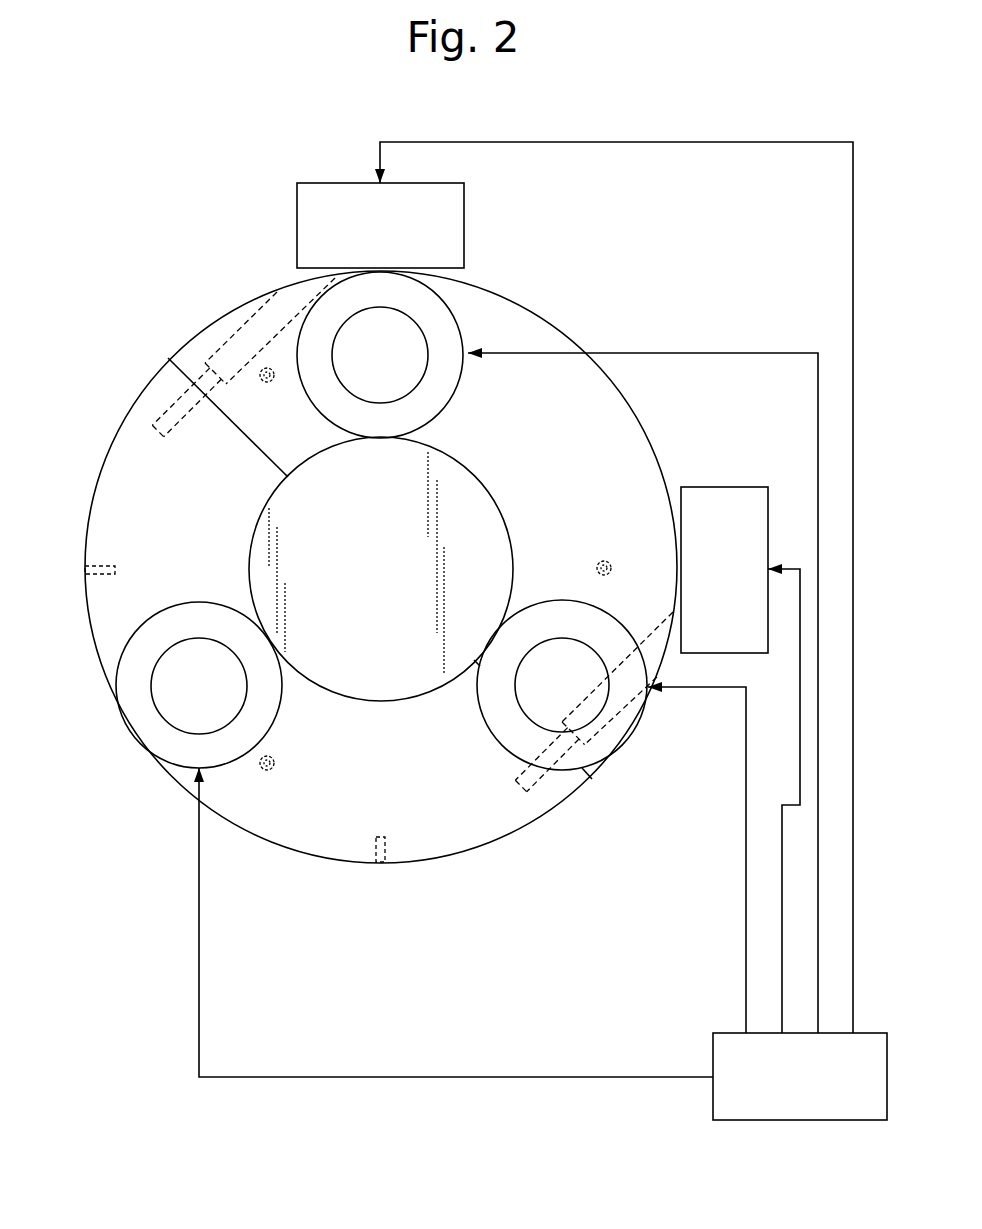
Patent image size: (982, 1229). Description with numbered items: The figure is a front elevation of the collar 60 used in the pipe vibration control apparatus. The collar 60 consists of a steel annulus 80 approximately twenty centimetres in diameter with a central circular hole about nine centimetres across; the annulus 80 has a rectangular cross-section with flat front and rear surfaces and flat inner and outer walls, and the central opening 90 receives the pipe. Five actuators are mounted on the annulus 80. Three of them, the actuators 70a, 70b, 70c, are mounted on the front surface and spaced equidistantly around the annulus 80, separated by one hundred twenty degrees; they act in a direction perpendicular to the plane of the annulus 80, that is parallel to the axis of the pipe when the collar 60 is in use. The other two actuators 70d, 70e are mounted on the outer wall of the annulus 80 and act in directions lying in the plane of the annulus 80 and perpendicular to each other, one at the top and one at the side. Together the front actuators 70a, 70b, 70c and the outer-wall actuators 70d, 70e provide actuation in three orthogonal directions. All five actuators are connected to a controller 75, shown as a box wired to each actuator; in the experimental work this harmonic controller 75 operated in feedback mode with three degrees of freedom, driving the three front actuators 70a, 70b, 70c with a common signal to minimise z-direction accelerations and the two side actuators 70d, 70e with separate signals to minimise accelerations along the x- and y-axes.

The collar 60 is at (155, 141).
The actuator 70a is at (182, 704).
The actuator 70b is at (548, 703).
The actuator 70c is at (345, 350).
The actuator 70d is at (330, 200).
The actuator 70e is at (718, 508).
The controller 75 is at (787, 1095).
The annulus 80 is at (533, 353).
The central hub 90 is at (345, 670).